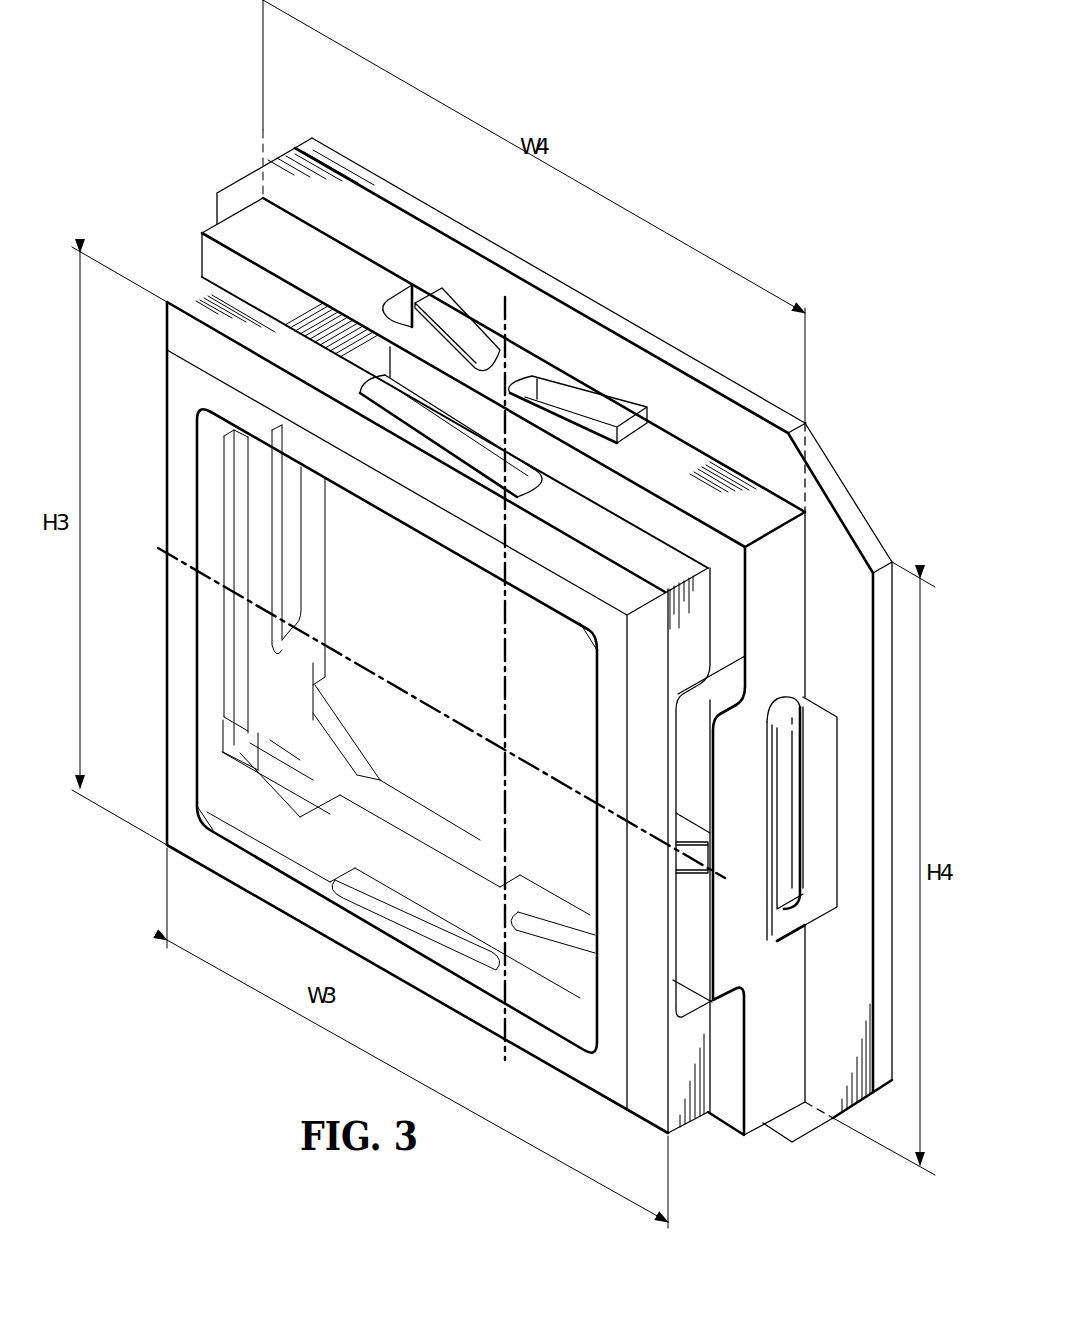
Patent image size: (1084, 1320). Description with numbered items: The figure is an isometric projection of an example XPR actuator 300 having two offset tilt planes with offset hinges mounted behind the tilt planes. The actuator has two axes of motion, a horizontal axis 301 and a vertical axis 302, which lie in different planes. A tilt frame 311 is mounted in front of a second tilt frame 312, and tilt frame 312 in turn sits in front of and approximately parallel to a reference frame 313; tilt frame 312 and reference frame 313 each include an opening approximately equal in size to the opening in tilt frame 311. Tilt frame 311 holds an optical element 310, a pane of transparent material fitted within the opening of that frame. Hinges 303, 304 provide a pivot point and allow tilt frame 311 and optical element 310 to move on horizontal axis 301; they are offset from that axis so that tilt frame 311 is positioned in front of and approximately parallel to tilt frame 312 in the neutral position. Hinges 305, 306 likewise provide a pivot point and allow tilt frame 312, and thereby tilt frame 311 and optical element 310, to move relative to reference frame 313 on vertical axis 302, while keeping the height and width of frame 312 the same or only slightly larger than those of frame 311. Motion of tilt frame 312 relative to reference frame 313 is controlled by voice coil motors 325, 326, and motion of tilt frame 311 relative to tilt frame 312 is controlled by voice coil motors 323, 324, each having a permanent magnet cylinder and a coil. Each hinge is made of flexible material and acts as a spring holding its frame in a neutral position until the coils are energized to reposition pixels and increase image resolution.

The XPR actuator 300 is at (778, 195).
The horizontal axis 301 is at (437, 715).
The vertical axis 302 is at (510, 686).
The hinge 303 is at (232, 598).
The hinge 304 is at (692, 870).
The hinge 305 is at (518, 900).
The hinge 306 is at (520, 368).
The optical element 310 is at (265, 853).
The tilt frame 311 is at (190, 300).
The tilt frame 312 is at (243, 220).
The reference frame 313 is at (432, 213).
The voice coil motor 323 is at (295, 592).
The voice coil motor 324 is at (793, 738).
The voice coil motor 325 is at (452, 927).
The voice coil motor 326 is at (410, 408).